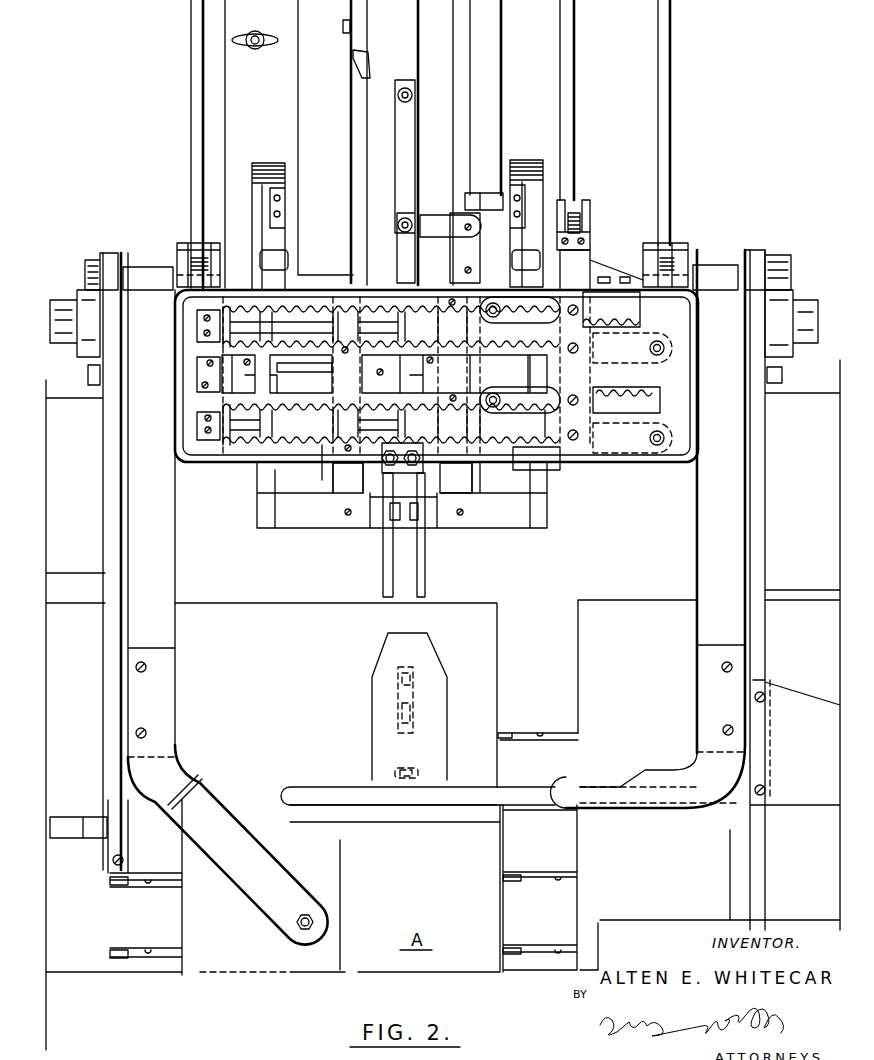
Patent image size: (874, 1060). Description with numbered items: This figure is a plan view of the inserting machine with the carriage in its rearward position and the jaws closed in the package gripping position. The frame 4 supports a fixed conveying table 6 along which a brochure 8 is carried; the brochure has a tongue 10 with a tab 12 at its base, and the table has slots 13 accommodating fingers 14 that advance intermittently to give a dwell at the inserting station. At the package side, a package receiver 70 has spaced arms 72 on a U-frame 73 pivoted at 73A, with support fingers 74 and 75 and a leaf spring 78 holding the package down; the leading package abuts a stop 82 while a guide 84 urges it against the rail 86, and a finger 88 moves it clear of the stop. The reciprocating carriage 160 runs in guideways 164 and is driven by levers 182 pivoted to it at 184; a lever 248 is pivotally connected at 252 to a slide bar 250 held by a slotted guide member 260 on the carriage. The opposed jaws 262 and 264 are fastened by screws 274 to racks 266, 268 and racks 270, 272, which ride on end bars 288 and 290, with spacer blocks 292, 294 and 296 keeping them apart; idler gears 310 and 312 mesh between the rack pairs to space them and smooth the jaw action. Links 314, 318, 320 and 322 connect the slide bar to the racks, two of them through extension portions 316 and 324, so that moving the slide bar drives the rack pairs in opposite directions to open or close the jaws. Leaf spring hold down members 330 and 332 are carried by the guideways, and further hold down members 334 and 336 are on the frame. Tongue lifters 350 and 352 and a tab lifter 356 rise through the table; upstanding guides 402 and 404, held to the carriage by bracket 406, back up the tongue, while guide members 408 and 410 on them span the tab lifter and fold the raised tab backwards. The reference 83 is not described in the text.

The frame 4 is at (110, 505).
The conveying table 6 is at (550, 860).
The brochure 8 is at (78, 907).
The tongue 10 is at (430, 670).
The tab 12 is at (420, 774).
The slots 13 is at (541, 730).
The fingers 14 is at (505, 732).
The package receiver 70 is at (378, 279).
The spaced arms 72 is at (330, 483).
The U-frame 73 is at (297, 515).
The pivot 73A is at (262, 162).
The support finger 74 is at (428, 423).
The support finger 75 is at (394, 429).
The leaf spring 78 is at (415, 372).
The stop 82 is at (472, 247).
The bar 83 is at (540, 71).
The guide 84 is at (371, 65).
The rail 86 is at (350, 108).
The finger 88 is at (490, 196).
The reciprocating carriage 160 is at (613, 282).
The guideways 164 is at (138, 275).
The levers 182 is at (192, 64).
The pivot 184 is at (200, 262).
The lever 248 is at (581, 14).
The slide bar 250 is at (588, 276).
The pivotal connection 252 is at (592, 205).
The slotted guide member 260 is at (627, 272).
The jaw 262 is at (470, 378).
The jaw 264 is at (343, 363).
The rack 266 is at (300, 280).
The rack 268 is at (293, 400).
The rack 270 is at (215, 350).
The rack 272 is at (215, 450).
The screws 274 is at (345, 346).
The end bar 288 is at (190, 290).
The end bar 290 is at (672, 323).
The spacer block 292 is at (197, 325).
The spacer block 294 is at (200, 375).
The spacer block 296 is at (200, 428).
The idler gear 310 is at (586, 318).
The idler gear 312 is at (596, 414).
The link 314 is at (562, 319).
The extension portion 316 is at (503, 280).
The link 318 is at (638, 358).
The link 320 is at (532, 398).
The link 322 is at (627, 446).
The extension portion 324 is at (672, 421).
The leaf spring hold down member 330 is at (222, 806).
The leaf spring hold down member 332 is at (592, 795).
The leaf spring hold down member 334 is at (313, 792).
The leaf spring hold down member 336 is at (70, 822).
The tongue lifter 350 is at (413, 722).
The tongue lifter 352 is at (413, 690).
The tab lifter 356 is at (408, 768).
The upstanding guide 402 is at (383, 572).
The upstanding guide 404 is at (424, 572).
The bracket 406 is at (385, 470).
The guide member 408 is at (432, 507).
The guide member 410 is at (418, 522).